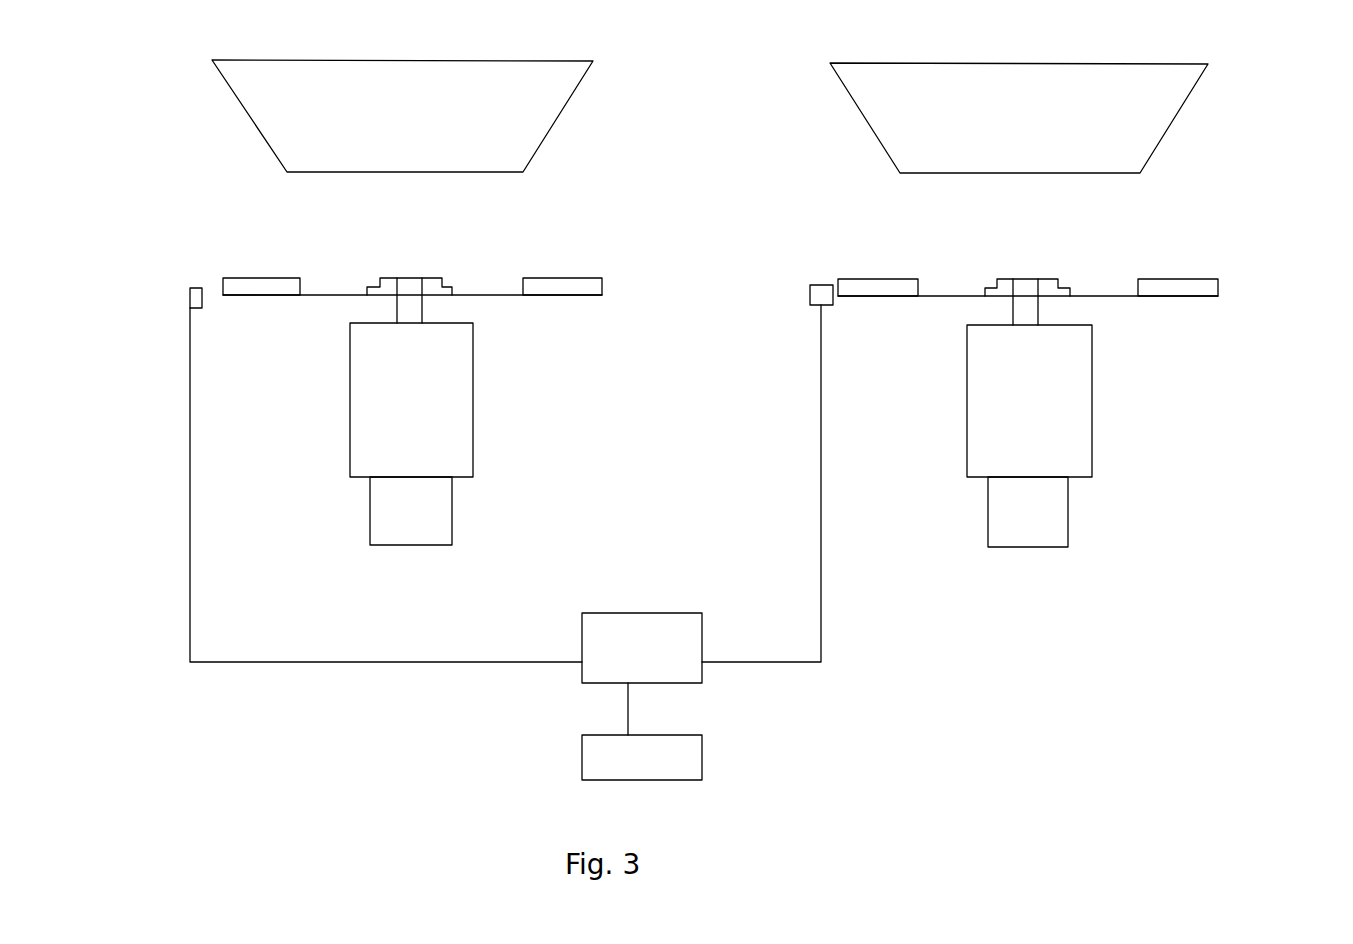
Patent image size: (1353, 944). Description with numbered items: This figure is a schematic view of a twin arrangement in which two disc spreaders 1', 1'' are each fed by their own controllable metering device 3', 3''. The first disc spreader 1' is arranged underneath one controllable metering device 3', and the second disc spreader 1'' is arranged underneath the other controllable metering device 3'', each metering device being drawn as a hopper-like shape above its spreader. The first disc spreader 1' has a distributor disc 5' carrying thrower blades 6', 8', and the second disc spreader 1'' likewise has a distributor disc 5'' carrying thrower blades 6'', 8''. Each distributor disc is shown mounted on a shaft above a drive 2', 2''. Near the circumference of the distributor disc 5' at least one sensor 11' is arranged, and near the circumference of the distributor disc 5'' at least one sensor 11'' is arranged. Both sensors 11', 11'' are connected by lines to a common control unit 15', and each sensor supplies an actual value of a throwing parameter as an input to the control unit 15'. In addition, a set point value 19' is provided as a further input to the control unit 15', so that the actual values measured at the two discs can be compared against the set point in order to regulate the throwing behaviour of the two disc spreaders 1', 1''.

The disc spreader 1' is at (400, 390).
The first drive unit 2' is at (391, 448).
The controllable metering device 3' is at (430, 128).
The distributor disc 5' is at (432, 333).
The thrower blade 6' is at (612, 268).
The thrower blade 8' is at (228, 228).
The sensor 11' is at (151, 276).
The control unit 15' is at (642, 589).
The set point value 19' is at (741, 736).
The disc spreader 1'' is at (1021, 349).
The second drive unit 2'' is at (1081, 441).
The controllable metering device 3'' is at (1057, 123).
The distributor disc 5'' is at (1031, 352).
The thrower blade 6'' is at (1231, 329).
The thrower blade 8'' is at (857, 230).
The sensor 11'' is at (775, 199).